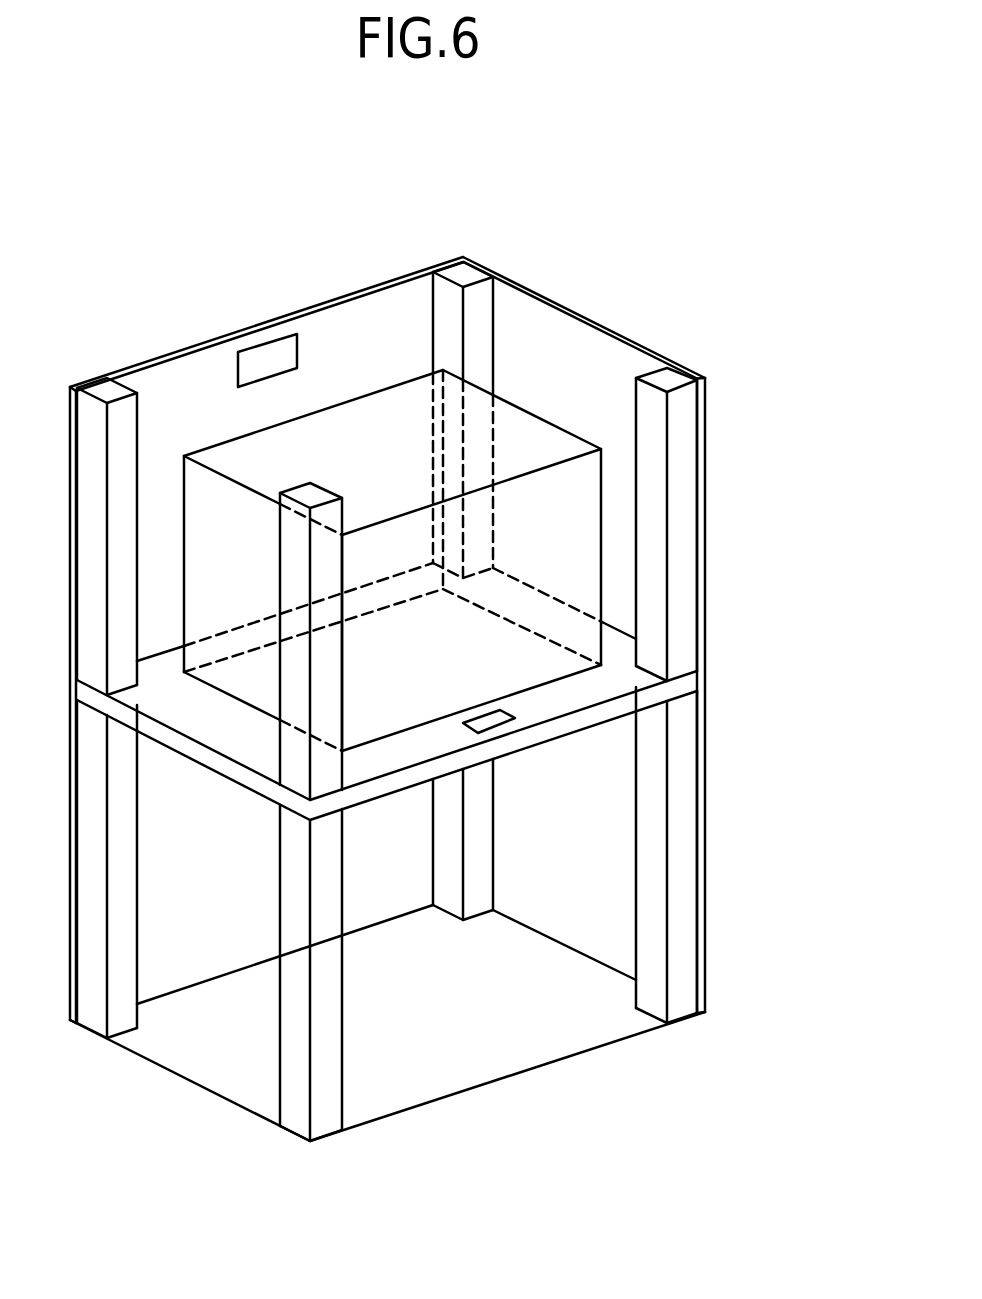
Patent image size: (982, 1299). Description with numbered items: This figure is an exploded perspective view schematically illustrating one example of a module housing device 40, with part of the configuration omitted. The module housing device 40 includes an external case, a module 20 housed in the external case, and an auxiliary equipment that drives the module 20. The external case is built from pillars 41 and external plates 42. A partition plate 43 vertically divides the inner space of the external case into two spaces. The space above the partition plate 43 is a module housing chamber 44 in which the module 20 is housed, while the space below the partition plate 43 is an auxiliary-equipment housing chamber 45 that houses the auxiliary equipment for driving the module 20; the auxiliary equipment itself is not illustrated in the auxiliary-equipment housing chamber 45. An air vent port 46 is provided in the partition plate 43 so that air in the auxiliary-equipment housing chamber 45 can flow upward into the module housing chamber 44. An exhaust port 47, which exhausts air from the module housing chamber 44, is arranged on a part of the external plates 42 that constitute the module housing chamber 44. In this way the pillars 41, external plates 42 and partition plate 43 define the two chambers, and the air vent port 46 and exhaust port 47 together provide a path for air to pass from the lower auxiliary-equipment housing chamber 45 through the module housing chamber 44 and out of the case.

The module 20 is at (535, 432).
The module housing device 40 is at (314, 187).
The pillars 41 is at (105, 387).
The external plates 42 is at (516, 280).
The partition plate 43 is at (683, 688).
The module housing chamber 44 is at (545, 350).
The auxiliary-equipment housing chamber 45 is at (190, 870).
The air vent port 46 is at (505, 718).
The exhaust port 47 is at (258, 360).